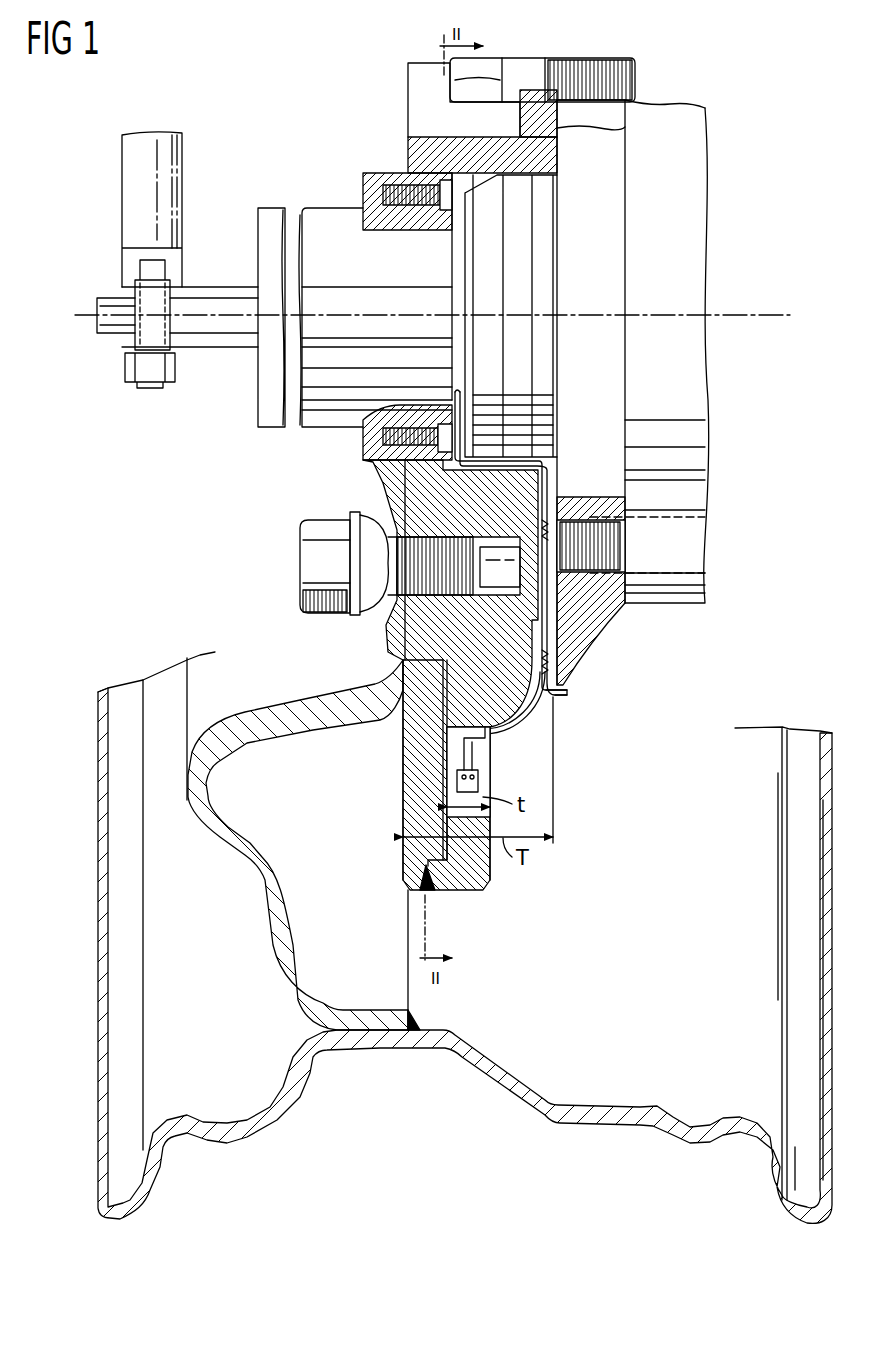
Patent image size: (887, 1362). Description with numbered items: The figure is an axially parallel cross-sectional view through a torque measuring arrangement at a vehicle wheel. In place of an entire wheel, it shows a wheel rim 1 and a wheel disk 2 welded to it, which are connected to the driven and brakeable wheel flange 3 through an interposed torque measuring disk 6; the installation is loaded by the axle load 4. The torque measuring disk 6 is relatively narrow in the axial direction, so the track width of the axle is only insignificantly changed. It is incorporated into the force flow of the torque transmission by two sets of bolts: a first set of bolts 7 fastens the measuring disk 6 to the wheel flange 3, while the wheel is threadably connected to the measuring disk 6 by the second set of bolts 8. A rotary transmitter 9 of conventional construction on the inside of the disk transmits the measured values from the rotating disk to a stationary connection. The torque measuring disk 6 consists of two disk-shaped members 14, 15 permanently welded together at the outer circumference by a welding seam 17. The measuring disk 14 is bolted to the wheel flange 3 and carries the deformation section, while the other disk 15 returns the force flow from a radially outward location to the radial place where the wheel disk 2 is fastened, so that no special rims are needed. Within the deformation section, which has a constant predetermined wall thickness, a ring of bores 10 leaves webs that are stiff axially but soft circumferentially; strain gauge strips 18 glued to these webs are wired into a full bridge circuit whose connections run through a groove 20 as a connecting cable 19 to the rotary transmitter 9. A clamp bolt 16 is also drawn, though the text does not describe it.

The wheel rim 1 is at (577, 1117).
The wheel disk 2 is at (272, 920).
The wheel flange 3 is at (600, 650).
The axle load 4 is at (757, 312).
The torque measuring disk 6 is at (401, 755).
The first set of bolts 7 is at (488, 87).
The second set of bolts 8 is at (310, 570).
The rotary transmitter 9 is at (328, 207).
The bores 10 is at (483, 758).
The measuring disk 14 is at (470, 700).
The disk 15 is at (422, 733).
The clamp bolt 16 is at (380, 455).
The welding seam 17 is at (433, 890).
The strain gauge strip 18 is at (465, 782).
The connecting cable 19 is at (567, 690).
The groove 20 is at (549, 483).